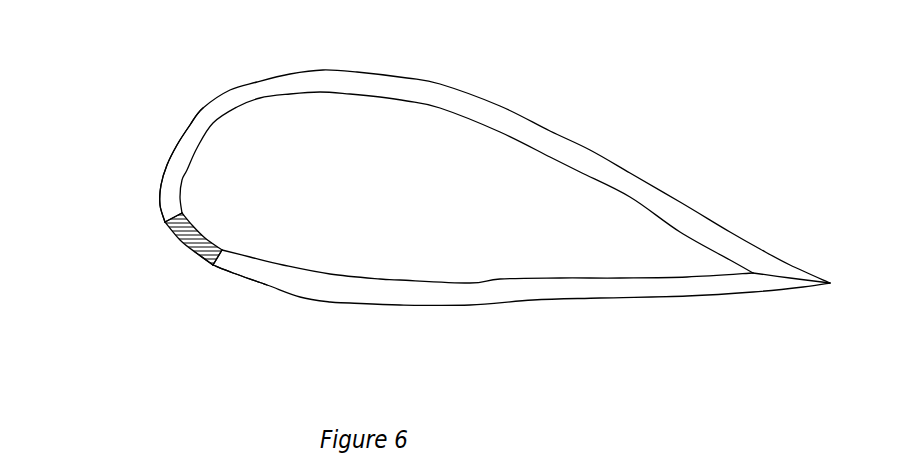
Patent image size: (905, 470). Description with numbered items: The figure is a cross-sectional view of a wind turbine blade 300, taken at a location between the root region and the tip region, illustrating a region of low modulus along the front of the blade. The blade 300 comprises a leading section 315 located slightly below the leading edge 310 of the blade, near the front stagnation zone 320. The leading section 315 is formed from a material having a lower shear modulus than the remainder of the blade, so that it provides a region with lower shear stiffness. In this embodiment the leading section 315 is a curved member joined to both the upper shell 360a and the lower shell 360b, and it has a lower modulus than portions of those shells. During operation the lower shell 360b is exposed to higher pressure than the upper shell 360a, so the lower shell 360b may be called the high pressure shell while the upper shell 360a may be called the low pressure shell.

The blade 300 is at (695, 108).
The leading edge 310 is at (100, 200).
The leading section 315 is at (182, 243).
The front stagnation zone 320 is at (182, 270).
The upper shell 360a is at (428, 64).
The lower shell 360b is at (412, 321).